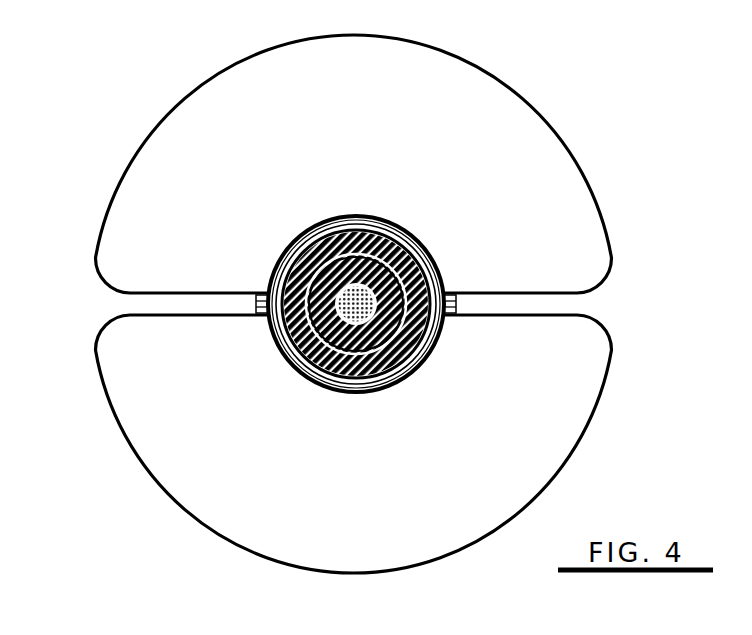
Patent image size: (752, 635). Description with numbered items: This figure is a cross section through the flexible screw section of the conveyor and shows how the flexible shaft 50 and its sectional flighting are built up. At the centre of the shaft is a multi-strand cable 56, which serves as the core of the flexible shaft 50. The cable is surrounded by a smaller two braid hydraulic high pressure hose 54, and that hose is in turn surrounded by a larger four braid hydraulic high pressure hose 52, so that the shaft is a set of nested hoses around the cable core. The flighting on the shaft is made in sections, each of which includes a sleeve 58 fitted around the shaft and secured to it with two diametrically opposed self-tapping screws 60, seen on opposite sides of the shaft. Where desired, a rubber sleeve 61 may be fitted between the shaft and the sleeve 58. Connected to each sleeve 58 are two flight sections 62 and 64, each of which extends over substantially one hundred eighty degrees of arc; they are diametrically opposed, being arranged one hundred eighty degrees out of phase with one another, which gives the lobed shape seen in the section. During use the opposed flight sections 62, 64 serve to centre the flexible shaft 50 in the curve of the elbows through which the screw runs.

The flexible shaft 50 is at (402, 367).
The four braid hydraulic high pressure hose 52 is at (413, 336).
The two braid hydraulic high pressure hose 54 is at (303, 367).
The multi-strand cable 56 is at (407, 243).
The sleeve 58 is at (362, 206).
The self-tapping screws 60 is at (452, 300).
The rubber sleeve 61 is at (311, 225).
The flight section 62 is at (523, 133).
The flight section 64 is at (155, 446).